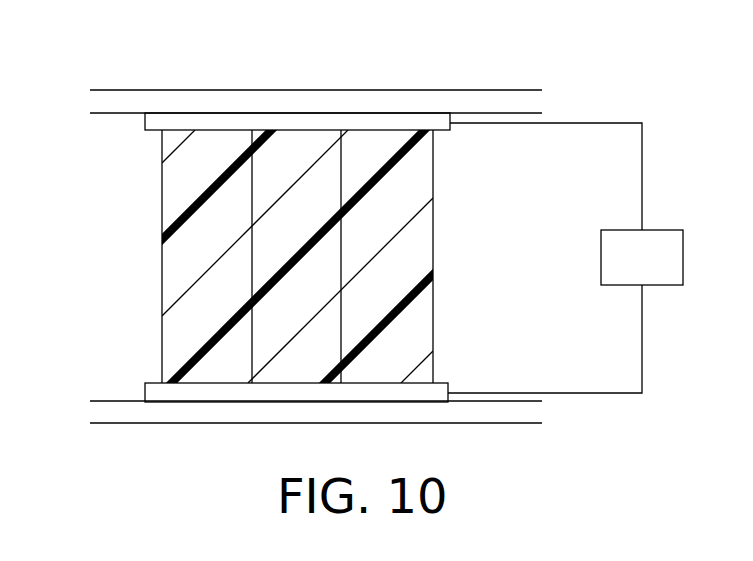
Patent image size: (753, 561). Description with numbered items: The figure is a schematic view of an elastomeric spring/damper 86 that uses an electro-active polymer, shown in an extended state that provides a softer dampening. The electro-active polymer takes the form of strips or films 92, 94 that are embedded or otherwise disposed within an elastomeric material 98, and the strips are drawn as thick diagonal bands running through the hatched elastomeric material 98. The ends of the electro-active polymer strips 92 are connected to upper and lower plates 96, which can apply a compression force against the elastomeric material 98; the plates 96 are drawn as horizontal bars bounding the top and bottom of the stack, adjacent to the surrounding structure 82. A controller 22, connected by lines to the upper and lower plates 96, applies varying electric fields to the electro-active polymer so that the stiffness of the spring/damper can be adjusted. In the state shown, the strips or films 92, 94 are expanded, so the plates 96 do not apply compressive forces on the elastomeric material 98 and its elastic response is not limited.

The controller 22 is at (628, 271).
The housing wall 82 is at (408, 103).
The elastomeric spring/damper 86 is at (124, 257).
The electro-active polymer strips 92 is at (250, 168).
The electro-active polymer strips or films 94 is at (346, 160).
The upper and lower plates 96 is at (186, 122).
The elastomeric material 98 is at (420, 250).